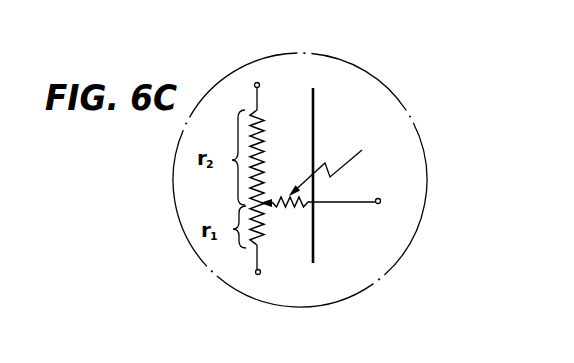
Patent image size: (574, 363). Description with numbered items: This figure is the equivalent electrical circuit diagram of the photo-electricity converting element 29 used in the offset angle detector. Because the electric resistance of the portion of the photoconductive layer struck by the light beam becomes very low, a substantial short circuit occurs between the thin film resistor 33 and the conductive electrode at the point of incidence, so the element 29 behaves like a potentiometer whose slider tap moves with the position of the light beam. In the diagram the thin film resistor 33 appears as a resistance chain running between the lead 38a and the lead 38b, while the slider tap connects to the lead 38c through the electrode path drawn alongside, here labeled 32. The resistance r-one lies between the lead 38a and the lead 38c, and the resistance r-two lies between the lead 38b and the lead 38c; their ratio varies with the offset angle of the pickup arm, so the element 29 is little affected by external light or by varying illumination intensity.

The photo-electricity converting element 29 is at (409, 78).
The electrode 32 is at (313, 117).
The thin film resistor 33 is at (287, 110).
The lead 38a is at (256, 274).
The lead 38b is at (255, 84).
The lead 38c is at (379, 198).